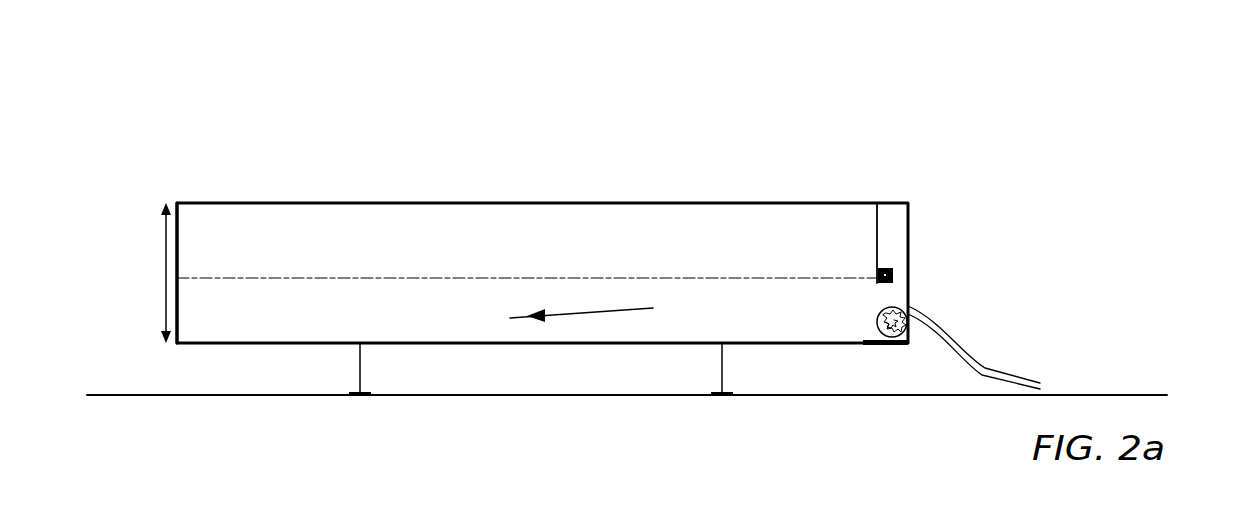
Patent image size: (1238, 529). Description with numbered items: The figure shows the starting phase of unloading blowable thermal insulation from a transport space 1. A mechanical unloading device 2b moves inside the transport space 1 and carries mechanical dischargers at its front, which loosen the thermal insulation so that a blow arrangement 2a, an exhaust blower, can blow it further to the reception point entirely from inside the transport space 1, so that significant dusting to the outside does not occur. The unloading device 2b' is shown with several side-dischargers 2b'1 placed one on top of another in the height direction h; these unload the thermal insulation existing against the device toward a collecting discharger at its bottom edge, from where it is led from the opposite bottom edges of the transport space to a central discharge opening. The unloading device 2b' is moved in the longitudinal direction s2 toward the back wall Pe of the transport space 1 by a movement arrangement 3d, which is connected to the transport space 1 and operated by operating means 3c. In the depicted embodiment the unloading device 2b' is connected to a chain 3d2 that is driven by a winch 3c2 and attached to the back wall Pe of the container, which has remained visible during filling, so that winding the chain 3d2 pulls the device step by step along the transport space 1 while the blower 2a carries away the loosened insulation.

The transport space 1 is at (527, 198).
The height direction h is at (153, 235).
The back wall Pe is at (186, 247).
The chain 3d2 is at (352, 278).
The longitudinal direction s2 is at (602, 310).
The side-dischargers 2b'1 is at (783, 221).
The mechanical unloading device 2b is at (833, 180).
The unloading device 2b' is at (866, 94).
The operating means 3c is at (891, 262).
The winch 3c2 is at (1019, 92).
The movement arrangement 3d is at (1083, 92).
The blow arrangement 2a is at (893, 318).